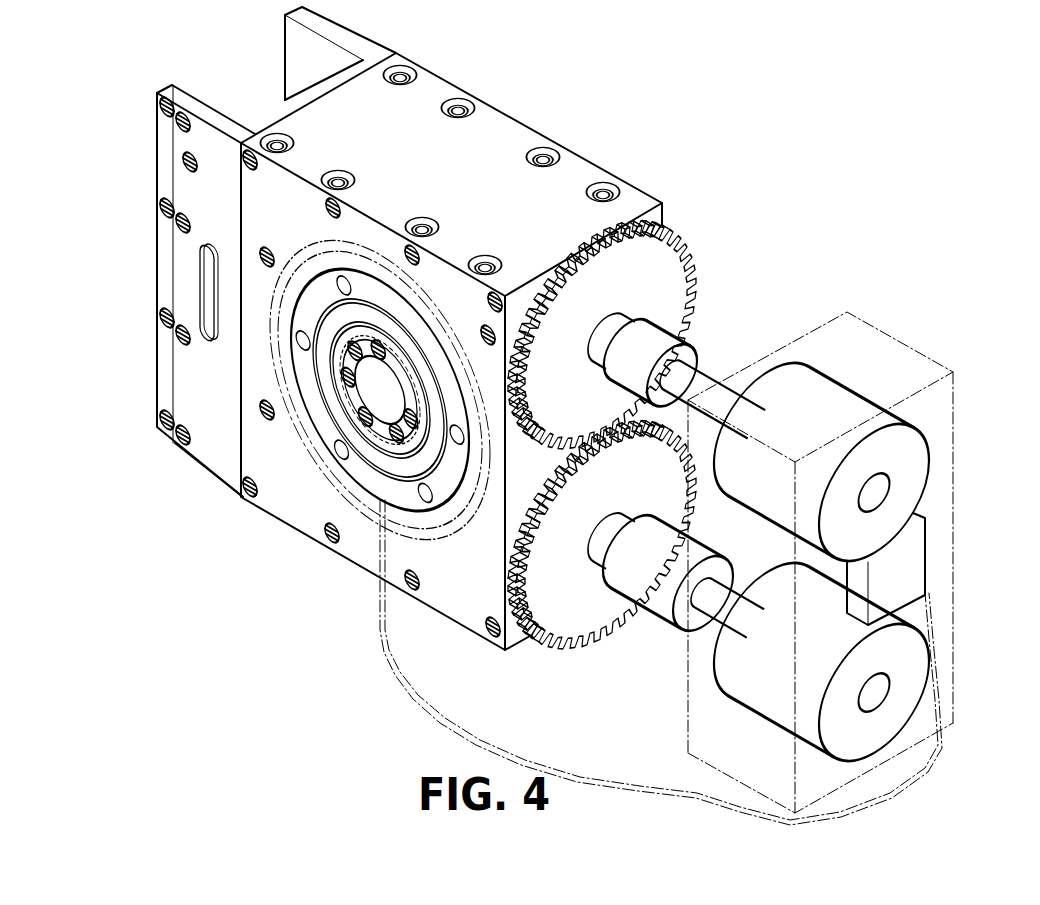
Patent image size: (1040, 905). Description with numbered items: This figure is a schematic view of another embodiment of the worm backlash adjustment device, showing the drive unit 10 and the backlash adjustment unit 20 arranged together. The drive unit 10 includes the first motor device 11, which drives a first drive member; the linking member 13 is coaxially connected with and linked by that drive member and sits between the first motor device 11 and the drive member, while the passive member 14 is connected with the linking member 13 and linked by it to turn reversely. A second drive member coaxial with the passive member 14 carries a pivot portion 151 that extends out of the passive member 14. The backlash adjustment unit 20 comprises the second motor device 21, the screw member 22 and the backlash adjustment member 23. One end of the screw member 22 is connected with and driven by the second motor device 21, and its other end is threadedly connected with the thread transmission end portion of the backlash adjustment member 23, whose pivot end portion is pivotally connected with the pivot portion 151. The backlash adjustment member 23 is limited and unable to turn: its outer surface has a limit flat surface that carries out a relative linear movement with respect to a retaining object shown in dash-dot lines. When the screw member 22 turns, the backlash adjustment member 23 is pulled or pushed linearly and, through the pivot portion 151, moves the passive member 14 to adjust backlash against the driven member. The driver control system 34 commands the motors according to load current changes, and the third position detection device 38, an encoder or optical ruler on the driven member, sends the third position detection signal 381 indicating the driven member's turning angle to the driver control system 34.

The drive unit 10 is at (862, 447).
The first motor device 11 is at (874, 492).
The linking member 13 is at (690, 258).
The passive member 14 is at (505, 577).
The pivot portion 151 is at (597, 565).
The backlash adjustment unit 20 is at (836, 662).
The second motor device 21 is at (867, 757).
The screw member 22 is at (698, 606).
The backlash adjustment member 23 is at (655, 600).
The driver control system 34 is at (928, 562).
The third position detection device 38 is at (340, 458).
The third position detection signal 381 is at (387, 632).